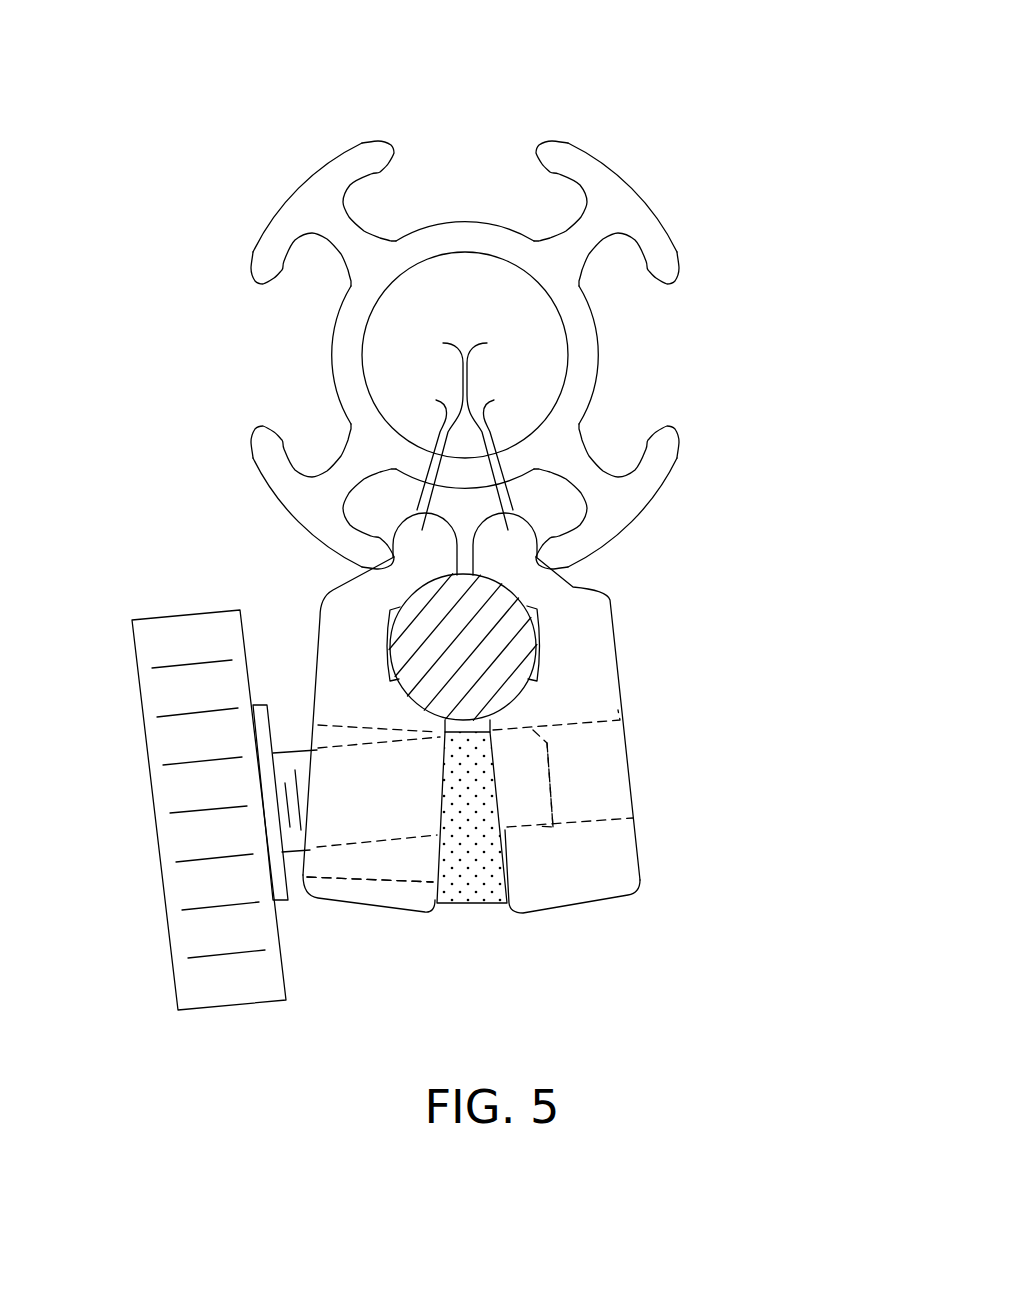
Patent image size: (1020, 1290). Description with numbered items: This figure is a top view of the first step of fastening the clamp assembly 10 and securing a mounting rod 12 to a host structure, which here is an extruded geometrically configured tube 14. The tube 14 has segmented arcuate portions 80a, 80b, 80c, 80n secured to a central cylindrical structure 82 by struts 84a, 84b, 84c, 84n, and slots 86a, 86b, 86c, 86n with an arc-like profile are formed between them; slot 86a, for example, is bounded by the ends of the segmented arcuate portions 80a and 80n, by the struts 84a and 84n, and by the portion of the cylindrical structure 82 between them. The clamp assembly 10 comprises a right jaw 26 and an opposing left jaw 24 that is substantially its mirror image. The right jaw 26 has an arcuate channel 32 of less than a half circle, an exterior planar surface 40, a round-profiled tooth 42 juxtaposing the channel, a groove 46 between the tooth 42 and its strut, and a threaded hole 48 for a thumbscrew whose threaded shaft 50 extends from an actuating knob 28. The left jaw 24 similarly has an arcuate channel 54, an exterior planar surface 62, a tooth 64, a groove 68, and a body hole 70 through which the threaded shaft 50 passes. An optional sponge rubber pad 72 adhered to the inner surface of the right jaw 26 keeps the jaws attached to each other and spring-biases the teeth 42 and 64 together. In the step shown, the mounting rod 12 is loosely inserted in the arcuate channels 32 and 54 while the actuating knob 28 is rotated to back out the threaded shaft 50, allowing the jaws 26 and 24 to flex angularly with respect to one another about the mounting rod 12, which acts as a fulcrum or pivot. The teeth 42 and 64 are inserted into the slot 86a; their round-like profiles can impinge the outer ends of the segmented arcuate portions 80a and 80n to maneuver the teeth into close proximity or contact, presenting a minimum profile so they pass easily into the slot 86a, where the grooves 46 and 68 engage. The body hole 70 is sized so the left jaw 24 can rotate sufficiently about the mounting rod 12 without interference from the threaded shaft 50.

The clamp assembly 10 is at (806, 654).
The mounting rod 12 is at (505, 636).
The extruded geometrically configured tube 14 is at (475, 319).
The left jaw 24 is at (358, 919).
The right jaw 26 is at (569, 919).
The actuating knob 28 is at (165, 738).
The arcuate channel 32 is at (530, 693).
The exterior planar surface 40 is at (612, 650).
The tooth 42 is at (498, 430).
The groove 46 is at (506, 448).
The threaded hole 48 is at (617, 737).
The threaded shaft 50 is at (297, 852).
The arcuate channel 54 is at (433, 703).
The exterior planar surface 62 is at (320, 623).
The tooth 64 is at (429, 430).
The groove 68 is at (423, 448).
The body hole 70 is at (402, 883).
The sponge rubber pad 72 is at (468, 892).
The segmented arcuate portion 80a is at (665, 452).
The segmented arcuate portion 80b is at (665, 262).
The segmented arcuate portion 80c is at (368, 157).
The segmented arcuate portion 80n is at (262, 448).
The central cylindrical structure 82 is at (583, 355).
The strut 84a is at (582, 472).
The strut 84b is at (597, 218).
The strut 84c is at (347, 240).
The strut 84n is at (340, 482).
The slot 86a is at (557, 510).
The slot 86b is at (636, 336).
The slot 86c is at (462, 183).
The slot 86n is at (318, 336).